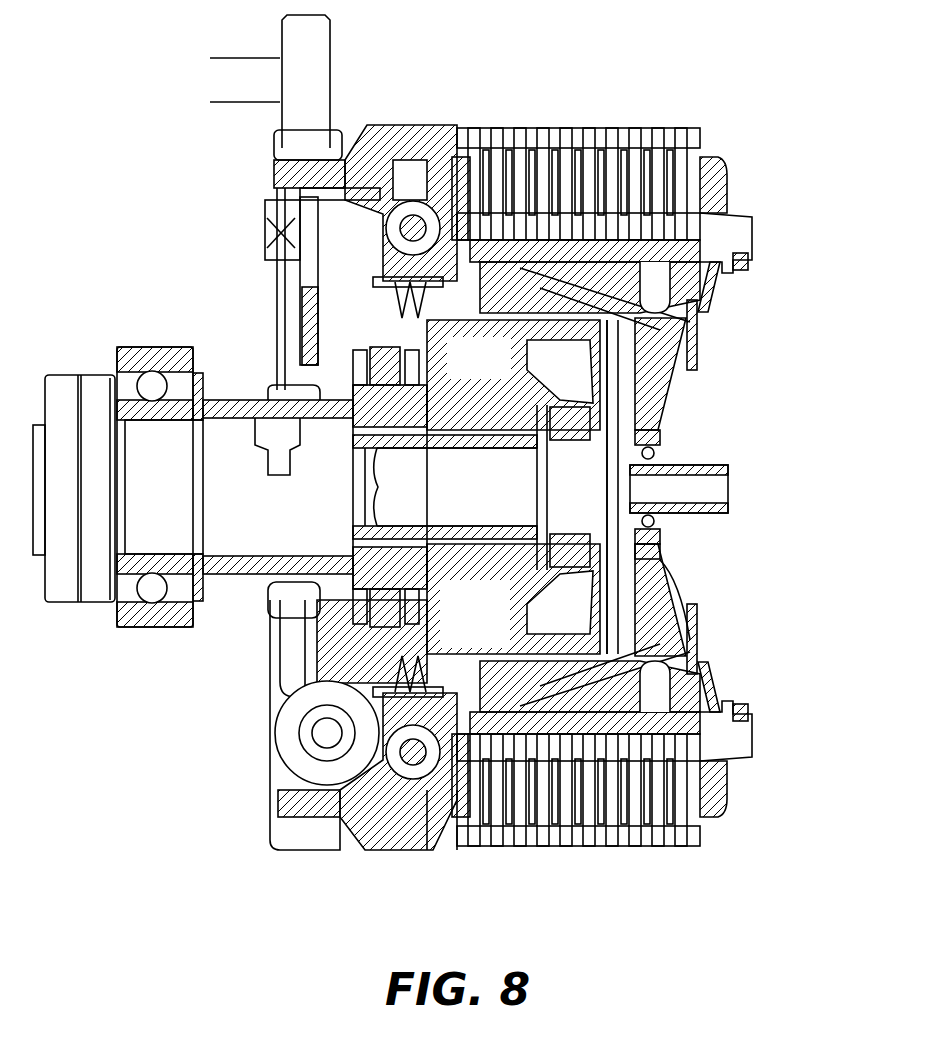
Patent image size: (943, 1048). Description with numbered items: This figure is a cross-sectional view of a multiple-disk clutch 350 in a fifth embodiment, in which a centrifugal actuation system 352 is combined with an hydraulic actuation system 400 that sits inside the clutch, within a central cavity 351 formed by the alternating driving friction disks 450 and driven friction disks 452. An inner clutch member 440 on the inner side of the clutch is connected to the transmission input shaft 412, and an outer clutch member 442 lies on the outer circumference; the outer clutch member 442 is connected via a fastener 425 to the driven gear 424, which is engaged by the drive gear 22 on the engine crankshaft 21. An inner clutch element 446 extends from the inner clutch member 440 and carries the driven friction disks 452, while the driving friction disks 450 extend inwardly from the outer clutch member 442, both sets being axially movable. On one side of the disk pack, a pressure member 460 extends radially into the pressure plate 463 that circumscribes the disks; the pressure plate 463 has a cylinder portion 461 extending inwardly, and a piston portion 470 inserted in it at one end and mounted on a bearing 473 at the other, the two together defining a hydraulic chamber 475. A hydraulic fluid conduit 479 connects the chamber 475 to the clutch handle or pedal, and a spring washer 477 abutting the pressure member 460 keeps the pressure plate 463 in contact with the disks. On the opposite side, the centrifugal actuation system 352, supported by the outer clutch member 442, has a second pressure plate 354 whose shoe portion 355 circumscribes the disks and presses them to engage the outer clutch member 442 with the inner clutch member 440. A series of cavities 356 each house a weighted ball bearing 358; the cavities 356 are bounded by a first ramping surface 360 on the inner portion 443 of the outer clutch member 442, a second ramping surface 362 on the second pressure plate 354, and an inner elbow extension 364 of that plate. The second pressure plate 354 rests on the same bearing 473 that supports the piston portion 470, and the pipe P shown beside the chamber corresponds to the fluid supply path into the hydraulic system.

The crankshaft 21 is at (235, 80).
The drive gear 22 is at (320, 40).
The multiple-disk clutch 350 is at (745, 163).
The central cavity 351 is at (705, 411).
The centrifugal actuation system 352 is at (410, 165).
The second pressure plate 354 is at (430, 812).
The shoe portion 355 is at (462, 853).
The cavities 356 is at (367, 847).
The weighted ball bearing 358 is at (347, 730).
The first ramping surface 360 is at (348, 840).
The second ramping surface 362 is at (420, 827).
The inner elbow extension 364 is at (440, 690).
The hydraulic actuation system 400 is at (668, 387).
The transmission input shaft 412 is at (443, 453).
The driven gear 424 is at (282, 172).
The fastener 425 is at (268, 225).
The inner clutch member 440 is at (487, 387).
The outer clutch member 442 is at (455, 130).
The inner portion 443 is at (307, 792).
The inner clutch element 446 is at (700, 312).
The driving friction disks 450 is at (545, 160).
The driven friction disks 452 is at (647, 160).
The pressure member 460 is at (695, 616).
The cylinder portion 461 is at (705, 670).
The pressure plate 463 is at (720, 190).
The piston portion 470 is at (625, 548).
The bearing 473 is at (300, 318).
The hydraulic chamber 475 is at (680, 567).
The spring washer 477 is at (723, 290).
The hydraulic fluid conduit 479 is at (670, 445).
The pipe P is at (702, 494).